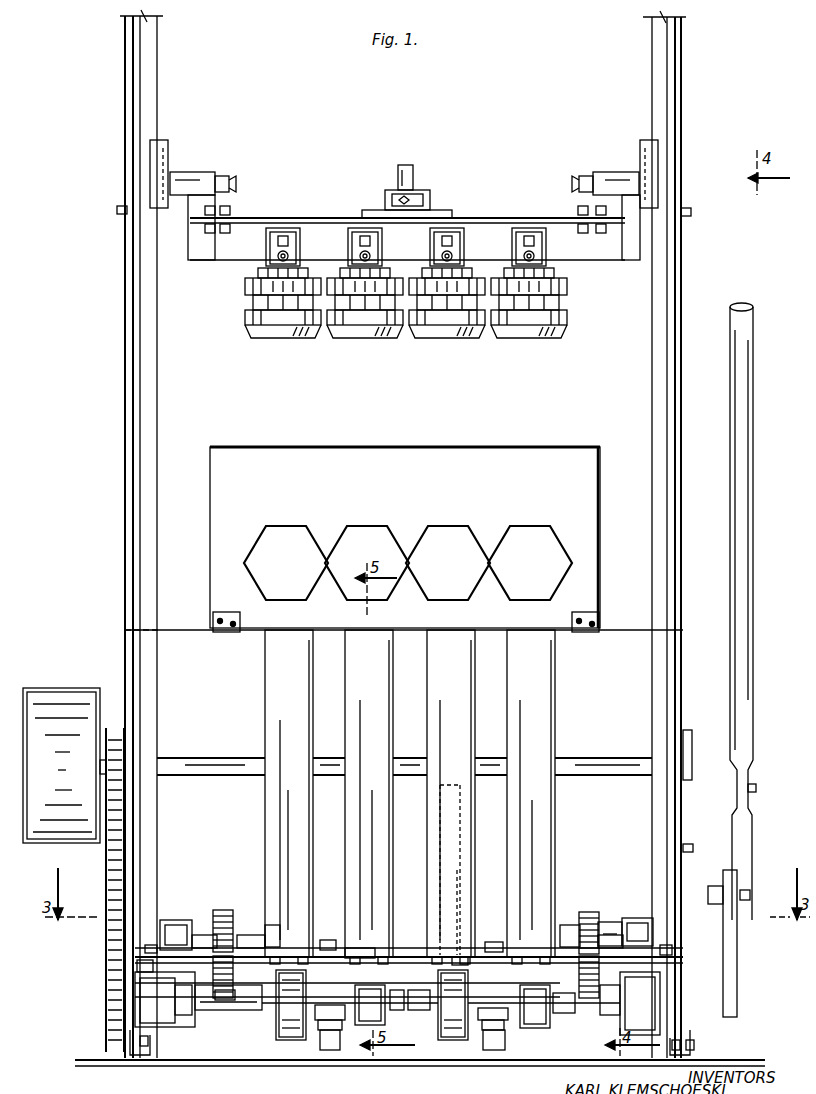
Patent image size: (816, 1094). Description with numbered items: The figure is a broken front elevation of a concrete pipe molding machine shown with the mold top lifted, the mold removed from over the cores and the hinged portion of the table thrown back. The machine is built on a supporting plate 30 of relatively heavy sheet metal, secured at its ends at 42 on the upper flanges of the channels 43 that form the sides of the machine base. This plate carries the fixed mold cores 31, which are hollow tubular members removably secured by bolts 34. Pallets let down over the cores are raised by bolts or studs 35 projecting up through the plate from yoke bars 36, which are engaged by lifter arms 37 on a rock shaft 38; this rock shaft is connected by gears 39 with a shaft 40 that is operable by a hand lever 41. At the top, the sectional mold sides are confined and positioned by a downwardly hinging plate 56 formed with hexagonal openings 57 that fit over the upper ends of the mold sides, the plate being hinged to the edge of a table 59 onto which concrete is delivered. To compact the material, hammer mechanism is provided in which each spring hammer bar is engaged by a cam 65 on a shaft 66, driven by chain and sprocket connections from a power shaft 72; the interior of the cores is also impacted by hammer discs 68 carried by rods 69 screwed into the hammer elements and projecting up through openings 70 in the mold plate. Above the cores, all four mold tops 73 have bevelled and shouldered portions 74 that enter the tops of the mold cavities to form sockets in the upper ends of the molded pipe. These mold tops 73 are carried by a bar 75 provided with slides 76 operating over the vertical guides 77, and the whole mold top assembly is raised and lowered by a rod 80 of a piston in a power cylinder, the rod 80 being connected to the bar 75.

The vertical guides 77 is at (157, 80).
The slides 76 is at (168, 142).
The bar 75 is at (325, 222).
The rod 80 is at (413, 176).
The mold tops 73 is at (252, 312).
The bevelled and shouldered portions 74 is at (262, 337).
The downwardly hinging plate 56 is at (412, 448).
The hexagonal openings 57 is at (350, 532).
The table 59 is at (615, 628).
The fixed mold cores 31 is at (316, 714).
The power shaft 72 is at (213, 760).
The hammer discs 68 is at (241, 870).
The hand lever 41 is at (753, 670).
The channels 43 is at (137, 1057).
The supporting plate 30 is at (197, 938).
The gears 39 is at (228, 915).
The securing points of the supporting plate 42 is at (151, 945).
The shaft 40 is at (605, 924).
The rock shaft 38 is at (257, 985).
The shaft 66 is at (207, 1011).
The cam 65 is at (278, 1038).
The lifter arms 37 is at (328, 1050).
The yoke bars 36 is at (506, 1022).
The bolts 34 is at (373, 957).
The bolts or studs 35 is at (329, 940).
The rods 69 is at (476, 870).
The openings 70 is at (462, 955).